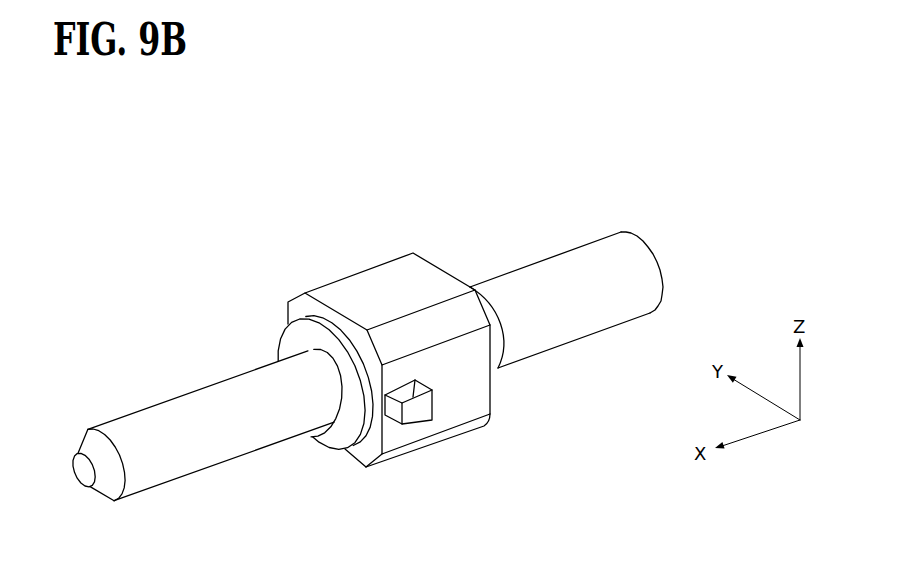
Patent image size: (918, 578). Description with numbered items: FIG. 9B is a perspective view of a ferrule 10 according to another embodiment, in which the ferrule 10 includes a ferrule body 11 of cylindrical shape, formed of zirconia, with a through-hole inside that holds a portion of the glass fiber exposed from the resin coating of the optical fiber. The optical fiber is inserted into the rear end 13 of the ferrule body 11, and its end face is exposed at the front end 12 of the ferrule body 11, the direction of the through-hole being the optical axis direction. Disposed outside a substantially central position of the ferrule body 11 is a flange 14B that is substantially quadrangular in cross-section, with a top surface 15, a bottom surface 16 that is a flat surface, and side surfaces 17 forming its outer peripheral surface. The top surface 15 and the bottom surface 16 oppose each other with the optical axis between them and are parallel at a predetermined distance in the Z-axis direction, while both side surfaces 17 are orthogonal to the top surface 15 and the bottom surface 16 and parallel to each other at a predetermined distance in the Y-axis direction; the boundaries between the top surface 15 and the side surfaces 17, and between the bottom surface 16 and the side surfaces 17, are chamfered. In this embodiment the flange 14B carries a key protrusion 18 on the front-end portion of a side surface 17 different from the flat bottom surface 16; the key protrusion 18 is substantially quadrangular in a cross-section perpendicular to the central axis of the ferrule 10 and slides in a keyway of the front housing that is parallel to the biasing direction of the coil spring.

The ferrule 10 is at (268, 247).
The ferrule body 11 is at (237, 461).
The front end 12 is at (80, 477).
The rear end 13 is at (638, 278).
The flange 14B is at (450, 452).
The top surface 15 is at (413, 272).
The bottom surface 16 is at (343, 453).
The side surfaces 17 is at (290, 312).
The key protrusion 18 is at (404, 426).